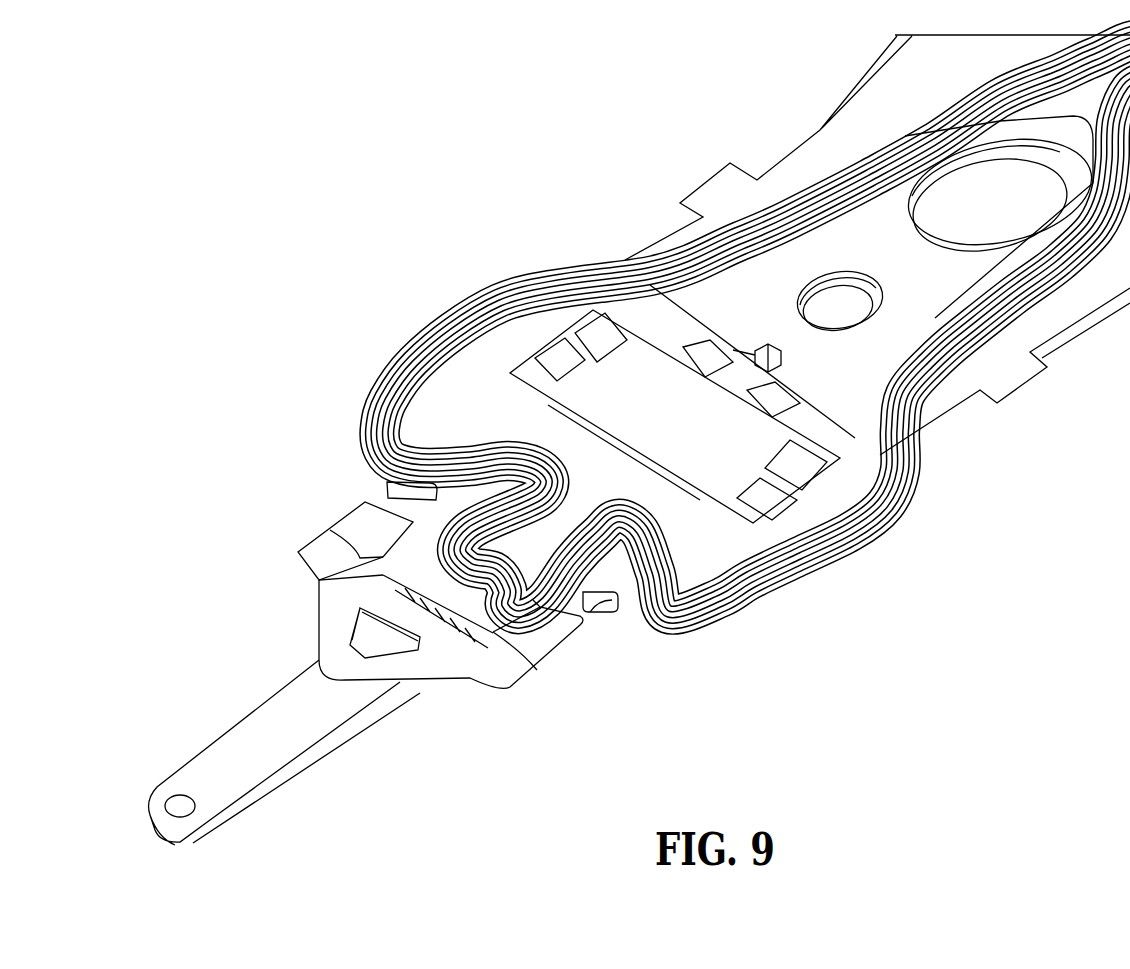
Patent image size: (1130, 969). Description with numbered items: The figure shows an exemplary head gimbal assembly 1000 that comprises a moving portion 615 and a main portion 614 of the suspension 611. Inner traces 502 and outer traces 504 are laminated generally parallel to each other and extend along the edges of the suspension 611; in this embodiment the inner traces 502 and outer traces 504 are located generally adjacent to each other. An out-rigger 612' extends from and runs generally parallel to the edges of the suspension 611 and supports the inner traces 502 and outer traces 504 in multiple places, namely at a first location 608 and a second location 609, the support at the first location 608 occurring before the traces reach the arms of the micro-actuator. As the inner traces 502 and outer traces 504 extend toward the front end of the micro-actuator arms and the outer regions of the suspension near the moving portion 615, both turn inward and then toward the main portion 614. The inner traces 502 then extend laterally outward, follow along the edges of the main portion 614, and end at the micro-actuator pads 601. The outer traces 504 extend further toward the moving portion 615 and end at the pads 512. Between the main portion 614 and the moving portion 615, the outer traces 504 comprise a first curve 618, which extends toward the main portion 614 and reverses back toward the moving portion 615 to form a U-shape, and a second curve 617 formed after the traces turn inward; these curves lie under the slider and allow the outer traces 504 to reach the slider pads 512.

The head gimbal assembly 1000 is at (337, 242).
The inner traces 502 is at (787, 557).
The outer traces 504 is at (747, 600).
The pads 512 is at (390, 568).
The micro-actuator pads 601 is at (585, 335).
The first location 608 is at (557, 273).
The second location 609 is at (407, 440).
The suspension 611 is at (680, 400).
The out-rigger 612' is at (603, 647).
The main portion 614 is at (507, 370).
The moving portion 615 is at (447, 657).
The second curve 617 is at (445, 545).
The first curve 618 is at (615, 565).